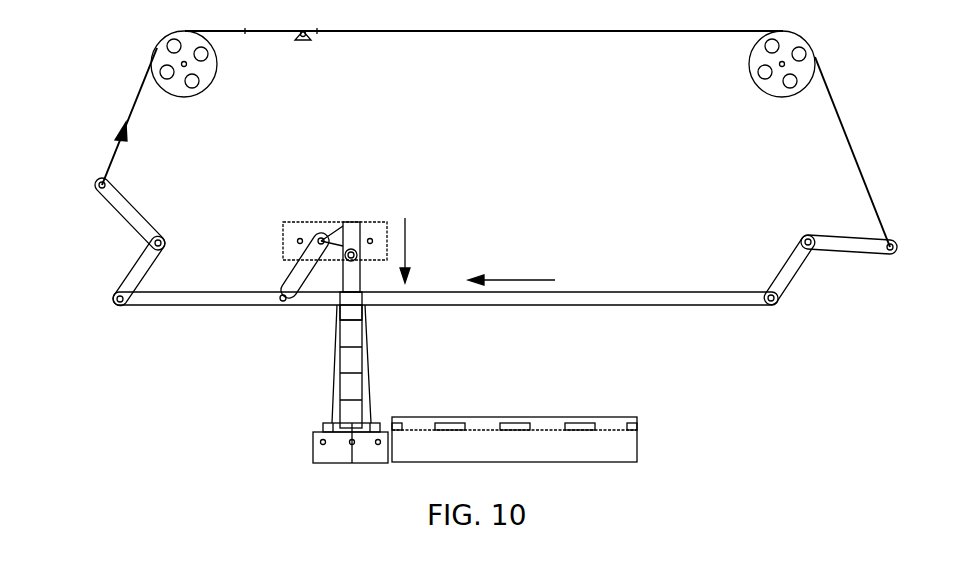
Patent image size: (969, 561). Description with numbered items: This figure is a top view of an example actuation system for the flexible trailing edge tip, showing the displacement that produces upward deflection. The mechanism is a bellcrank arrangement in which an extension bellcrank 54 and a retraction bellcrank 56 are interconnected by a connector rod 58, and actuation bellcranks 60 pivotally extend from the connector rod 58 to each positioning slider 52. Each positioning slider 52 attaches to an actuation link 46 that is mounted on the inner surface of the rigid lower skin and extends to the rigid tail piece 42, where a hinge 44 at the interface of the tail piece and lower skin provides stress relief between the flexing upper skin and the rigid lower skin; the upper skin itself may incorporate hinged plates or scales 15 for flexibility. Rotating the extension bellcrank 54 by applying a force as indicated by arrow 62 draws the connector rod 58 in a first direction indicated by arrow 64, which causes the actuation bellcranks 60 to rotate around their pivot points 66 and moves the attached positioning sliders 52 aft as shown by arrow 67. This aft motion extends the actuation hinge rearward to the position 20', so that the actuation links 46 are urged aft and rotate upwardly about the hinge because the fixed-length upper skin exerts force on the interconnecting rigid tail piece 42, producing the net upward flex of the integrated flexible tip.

The hinged plates or scales 15 is at (350, 335).
The aft position of actuation hinge 20' is at (295, 321).
The rigid tail piece 42 is at (313, 440).
The hinge 44 is at (518, 425).
The actuation links 46 is at (333, 380).
The positioning slider 52 is at (352, 222).
The extension bellcrank 54 is at (133, 210).
The retraction bellcrank 56 is at (828, 233).
The connector rod 58 is at (545, 295).
The actuation bellcranks 60 is at (307, 268).
The arrow indicating applied force 62 is at (112, 153).
The arrow indicating first direction 64 is at (505, 280).
The pivot points 66 is at (321, 240).
The arrow indicating aft motion 67 is at (408, 257).